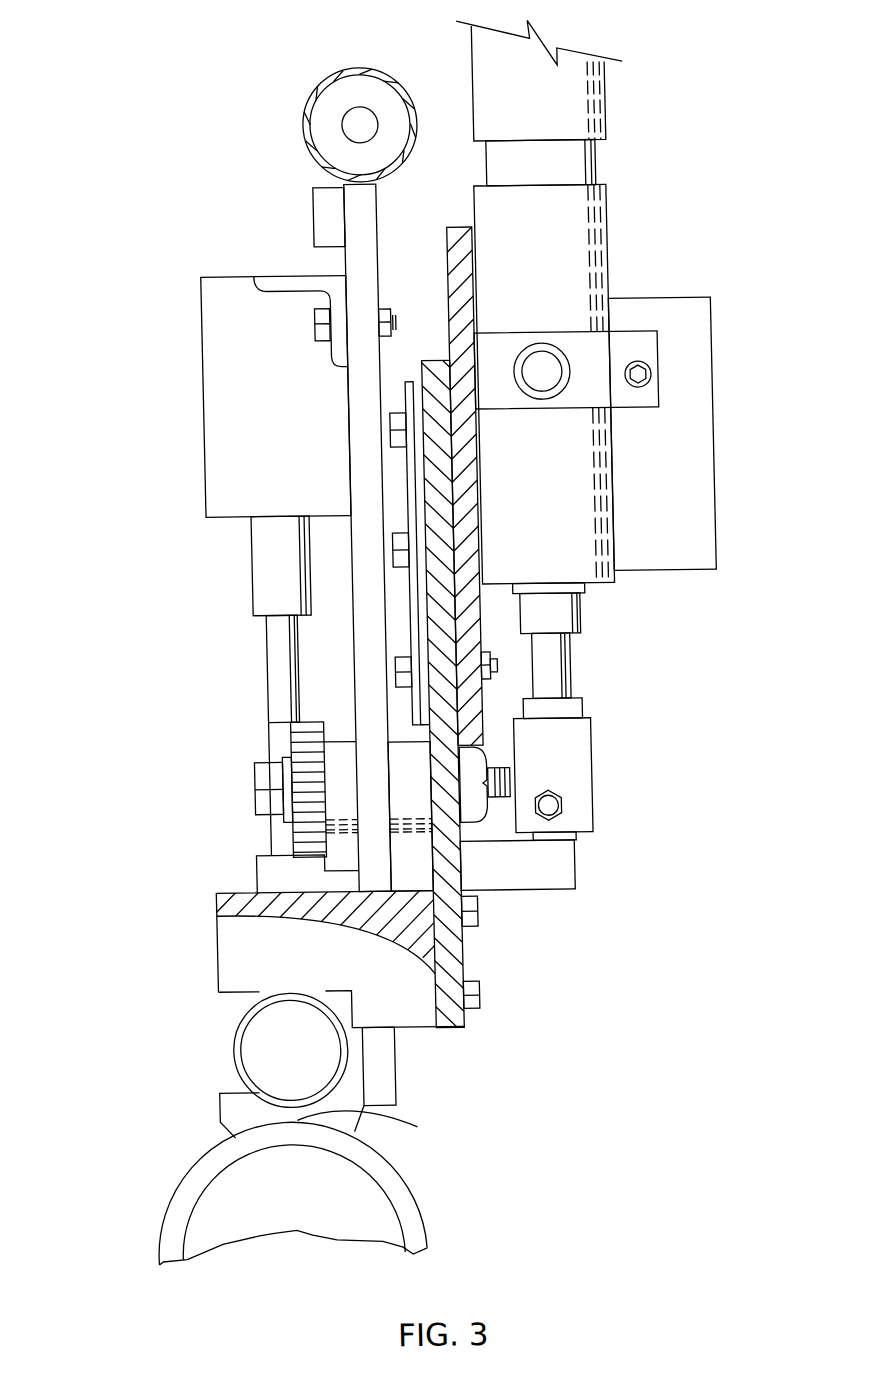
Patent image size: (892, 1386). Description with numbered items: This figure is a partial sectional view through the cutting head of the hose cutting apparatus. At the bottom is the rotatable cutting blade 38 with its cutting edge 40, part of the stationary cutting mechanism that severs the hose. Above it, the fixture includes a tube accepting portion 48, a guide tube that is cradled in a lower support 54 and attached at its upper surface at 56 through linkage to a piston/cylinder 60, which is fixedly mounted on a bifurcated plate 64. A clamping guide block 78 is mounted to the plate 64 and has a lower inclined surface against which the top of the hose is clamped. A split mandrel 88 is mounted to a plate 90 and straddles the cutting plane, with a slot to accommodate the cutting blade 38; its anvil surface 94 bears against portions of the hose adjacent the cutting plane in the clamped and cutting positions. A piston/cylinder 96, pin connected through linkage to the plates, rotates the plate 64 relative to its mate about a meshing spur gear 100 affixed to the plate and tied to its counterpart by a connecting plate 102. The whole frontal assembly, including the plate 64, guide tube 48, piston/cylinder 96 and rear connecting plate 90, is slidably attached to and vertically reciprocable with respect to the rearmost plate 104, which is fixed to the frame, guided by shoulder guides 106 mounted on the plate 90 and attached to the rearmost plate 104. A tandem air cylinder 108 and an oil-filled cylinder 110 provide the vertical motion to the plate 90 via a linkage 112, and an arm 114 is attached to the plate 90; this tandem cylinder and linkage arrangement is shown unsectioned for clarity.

The cutting blade 38 is at (285, 1208).
The cutting edge 40 is at (407, 1127).
The tube accepting portion 48 is at (225, 1065).
The lower support 54 is at (219, 1118).
The upper attachment 56 is at (249, 988).
The piston/cylinder 60 is at (209, 349).
The bifurcated plate 64 is at (354, 263).
The clamping guide block 78 is at (254, 876).
The split mandrel 88 is at (211, 912).
The plate 90 is at (446, 365).
The anvil surface 94 is at (229, 991).
The piston/cylinder 96 is at (319, 107).
The spur gear 100 is at (290, 720).
The connecting plate 102 is at (285, 752).
The rearmost plate 104 is at (478, 228).
The shoulder guide 106 is at (417, 388).
The tandem air cylinder 108 is at (617, 107).
The oil-filled cylinder 110 is at (617, 219).
The linkage 112 is at (589, 751).
The arm 114 is at (570, 880).